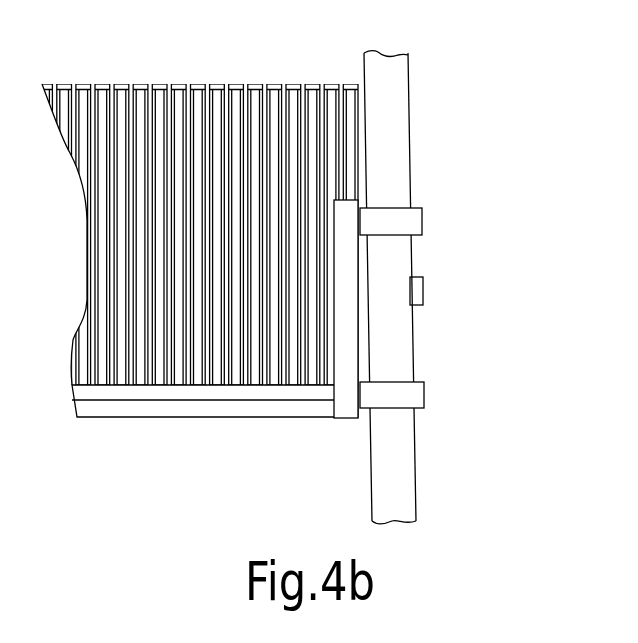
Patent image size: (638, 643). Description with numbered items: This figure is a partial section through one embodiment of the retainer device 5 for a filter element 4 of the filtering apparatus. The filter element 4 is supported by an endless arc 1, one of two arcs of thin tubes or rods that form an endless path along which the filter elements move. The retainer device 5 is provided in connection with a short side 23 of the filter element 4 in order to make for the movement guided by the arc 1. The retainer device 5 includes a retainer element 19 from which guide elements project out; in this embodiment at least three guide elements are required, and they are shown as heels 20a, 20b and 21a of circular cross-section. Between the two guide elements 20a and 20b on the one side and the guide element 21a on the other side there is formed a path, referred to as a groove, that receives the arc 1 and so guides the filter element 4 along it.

The endless arc 1 is at (427, 287).
The filter element 4 is at (185, 370).
The retainer device 5 is at (350, 407).
The retainer element 19 is at (366, 263).
The guide element 20a is at (415, 208).
The guide element 20b is at (415, 395).
The guide element 21a is at (417, 290).
The short side 23 is at (365, 121).